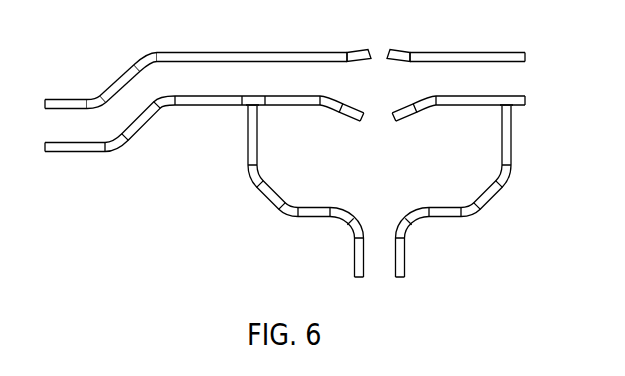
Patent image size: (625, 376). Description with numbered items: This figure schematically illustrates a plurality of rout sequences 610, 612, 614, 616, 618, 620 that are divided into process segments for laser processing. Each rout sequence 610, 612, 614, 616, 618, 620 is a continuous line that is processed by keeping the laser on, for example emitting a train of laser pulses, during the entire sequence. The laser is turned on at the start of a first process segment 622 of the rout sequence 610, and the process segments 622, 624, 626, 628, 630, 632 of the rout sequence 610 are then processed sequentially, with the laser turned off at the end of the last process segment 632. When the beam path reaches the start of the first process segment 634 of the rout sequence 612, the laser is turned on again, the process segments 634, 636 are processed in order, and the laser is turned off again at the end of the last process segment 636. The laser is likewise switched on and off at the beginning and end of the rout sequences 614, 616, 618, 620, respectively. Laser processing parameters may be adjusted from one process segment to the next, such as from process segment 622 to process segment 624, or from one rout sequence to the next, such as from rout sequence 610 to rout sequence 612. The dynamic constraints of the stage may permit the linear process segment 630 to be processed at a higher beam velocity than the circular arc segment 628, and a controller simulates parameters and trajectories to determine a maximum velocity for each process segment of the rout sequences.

The rout sequence 610 is at (203, 76).
The rout sequence 612 is at (478, 51).
The rout sequence 614 is at (94, 162).
The rout sequence 616 is at (534, 88).
The rout sequence 618 is at (260, 220).
The rout sequence 620 is at (509, 200).
The first process segment 622 is at (80, 109).
The process segment 624 is at (99, 95).
The process segment 626 is at (125, 89).
The circular arc segment 628 is at (142, 59).
The linear process segment 630 is at (237, 62).
The last process segment 632 is at (360, 50).
The first process segment 634 is at (397, 63).
The last process segment 636 is at (519, 51).